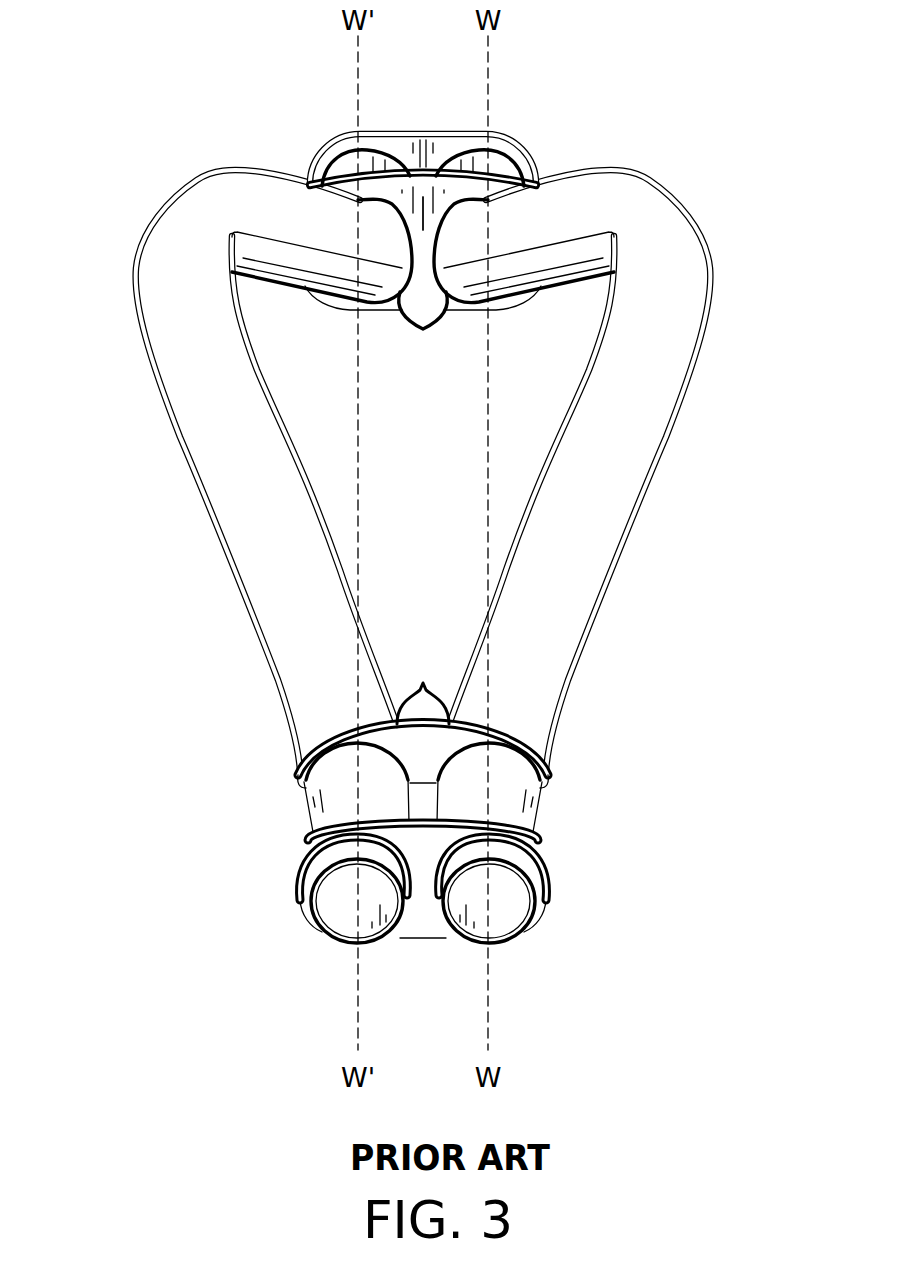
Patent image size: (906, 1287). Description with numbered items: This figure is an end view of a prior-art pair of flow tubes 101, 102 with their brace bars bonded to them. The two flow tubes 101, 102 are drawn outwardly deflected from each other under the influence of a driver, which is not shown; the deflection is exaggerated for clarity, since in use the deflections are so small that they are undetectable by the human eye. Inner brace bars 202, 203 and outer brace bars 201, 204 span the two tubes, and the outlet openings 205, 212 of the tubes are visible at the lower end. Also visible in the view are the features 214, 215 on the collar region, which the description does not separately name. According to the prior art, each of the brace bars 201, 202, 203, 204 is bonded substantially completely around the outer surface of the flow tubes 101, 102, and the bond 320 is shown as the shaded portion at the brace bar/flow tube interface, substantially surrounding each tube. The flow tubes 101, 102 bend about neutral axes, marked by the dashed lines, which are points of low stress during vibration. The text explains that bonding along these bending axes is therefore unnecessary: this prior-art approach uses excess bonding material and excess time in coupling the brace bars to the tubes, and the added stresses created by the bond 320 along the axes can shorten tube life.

The flow tube 101 is at (156, 279).
The flow tube 102 is at (690, 279).
The outer brace bar 201 is at (394, 144).
The inner brace bar 202 is at (349, 303).
The inner brace bar 203 is at (552, 763).
The outer brace bar 204 is at (550, 906).
The outlet opening 205 is at (333, 921).
The outlet opening 212 is at (513, 921).
The first cup wall 214 is at (312, 810).
The second cup wall 215 is at (534, 810).
The bond 320 is at (318, 165).